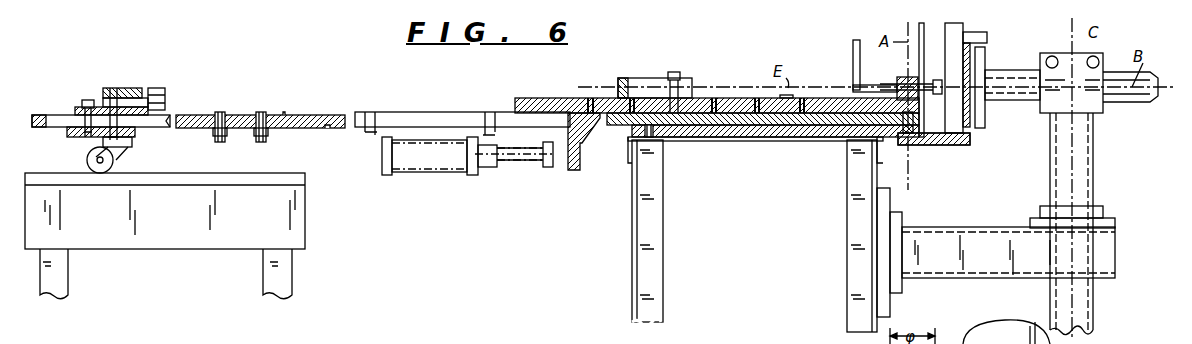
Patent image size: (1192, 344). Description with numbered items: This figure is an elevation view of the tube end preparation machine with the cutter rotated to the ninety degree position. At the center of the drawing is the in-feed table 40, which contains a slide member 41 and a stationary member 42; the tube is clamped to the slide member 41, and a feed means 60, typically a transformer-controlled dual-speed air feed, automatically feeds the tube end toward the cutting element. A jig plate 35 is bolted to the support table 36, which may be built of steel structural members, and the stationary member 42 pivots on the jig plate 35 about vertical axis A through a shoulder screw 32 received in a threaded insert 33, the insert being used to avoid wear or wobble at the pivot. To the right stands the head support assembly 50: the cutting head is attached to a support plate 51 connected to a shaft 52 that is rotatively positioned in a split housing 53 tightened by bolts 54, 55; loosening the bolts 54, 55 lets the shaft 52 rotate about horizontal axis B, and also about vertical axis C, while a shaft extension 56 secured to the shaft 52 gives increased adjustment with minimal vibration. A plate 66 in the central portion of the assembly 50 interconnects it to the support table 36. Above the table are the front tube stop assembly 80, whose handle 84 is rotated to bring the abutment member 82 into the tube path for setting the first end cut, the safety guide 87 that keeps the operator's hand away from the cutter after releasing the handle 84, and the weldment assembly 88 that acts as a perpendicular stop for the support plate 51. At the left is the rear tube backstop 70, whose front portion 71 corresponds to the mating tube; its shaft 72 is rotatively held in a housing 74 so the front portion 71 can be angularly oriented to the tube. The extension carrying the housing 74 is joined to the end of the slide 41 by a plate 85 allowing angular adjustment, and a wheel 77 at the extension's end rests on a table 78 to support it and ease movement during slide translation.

The rear tube backstop 70 is at (130, 80).
The shaft 72 is at (143, 88).
The housing 74 is at (115, 86).
The front portion 71 is at (167, 100).
The wheel 77 is at (118, 165).
The plate 85 is at (289, 133).
The table 78 is at (178, 236).
The slide member 41 is at (607, 87).
The feed means 60 is at (525, 170).
The in-feed table 40 is at (681, 70).
The jig plate 35 is at (738, 140).
The stationary member 42 is at (810, 137).
The support table 36 is at (658, 237).
The front tube stop assembly 80 is at (845, 43).
The handle 84 is at (853, 73).
The safety guide 87 is at (922, 46).
The weldment assembly 88 is at (945, 64).
The abutment member 82 is at (914, 122).
The shoulder screw 32 is at (935, 145).
The threaded insert 33 is at (934, 139).
The support plate 51 is at (983, 50).
The shaft 52 is at (1008, 70).
The split housing 53 is at (1040, 108).
The support assembly 50 is at (1043, 184).
The bolt 55 is at (1052, 56).
The bolt 54 is at (1099, 57).
The shaft extension 56 is at (1133, 103).
The plate 66 is at (902, 282).